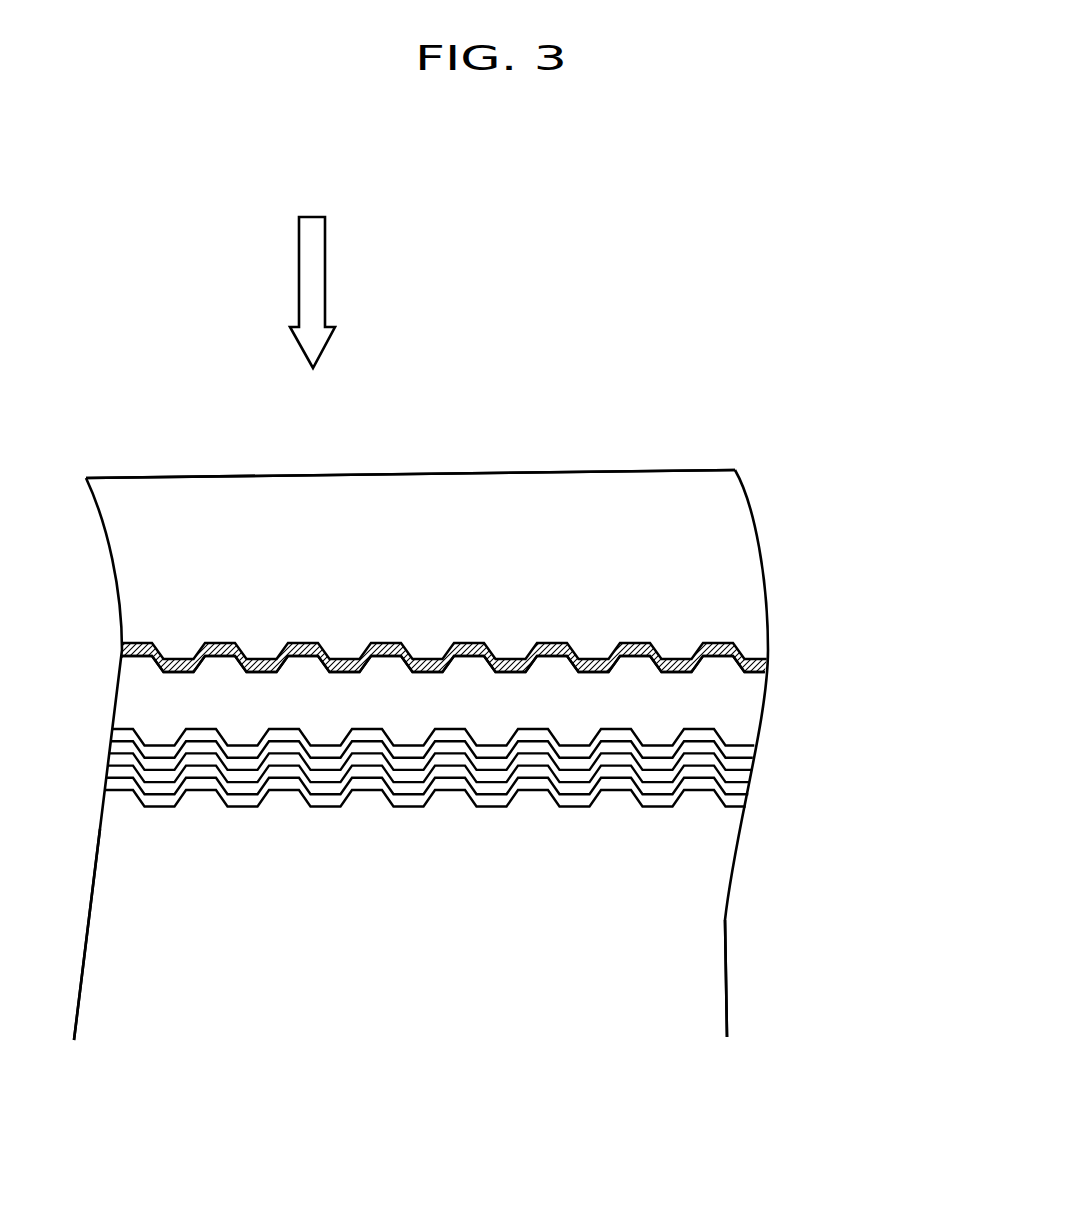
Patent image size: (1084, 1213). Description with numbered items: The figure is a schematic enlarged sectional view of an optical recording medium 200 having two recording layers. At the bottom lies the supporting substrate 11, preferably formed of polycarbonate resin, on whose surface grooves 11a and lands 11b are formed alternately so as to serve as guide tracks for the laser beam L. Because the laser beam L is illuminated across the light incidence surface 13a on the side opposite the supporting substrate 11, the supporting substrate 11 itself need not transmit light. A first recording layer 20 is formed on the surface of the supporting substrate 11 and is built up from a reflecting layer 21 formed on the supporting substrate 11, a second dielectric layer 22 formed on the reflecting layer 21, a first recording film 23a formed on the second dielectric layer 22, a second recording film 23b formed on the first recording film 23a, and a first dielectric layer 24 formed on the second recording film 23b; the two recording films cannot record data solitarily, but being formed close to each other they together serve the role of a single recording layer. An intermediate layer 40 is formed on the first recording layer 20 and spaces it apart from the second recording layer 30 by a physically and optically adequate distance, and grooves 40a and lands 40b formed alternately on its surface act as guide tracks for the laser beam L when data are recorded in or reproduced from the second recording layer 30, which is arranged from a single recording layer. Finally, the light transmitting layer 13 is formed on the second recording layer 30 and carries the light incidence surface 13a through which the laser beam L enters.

The laser beam L is at (325, 270).
The optical recording medium 200 is at (587, 403).
The light incidence surface 13a is at (640, 470).
The light transmitting layer 13 is at (720, 548).
The second recording layer 30 is at (770, 654).
The intermediate layer 40 is at (752, 693).
The grooves 40a is at (218, 658).
The lands 40b is at (428, 672).
The first dielectric layer 24 is at (755, 743).
The second recording film 23b is at (753, 753).
The first recording film 23a is at (752, 770).
The second dielectric layer 22 is at (750, 783).
The reflecting layer 21 is at (480, 832).
The first recording layer 20 is at (528, 789).
The supporting substrate 11 is at (697, 923).
The grooves 11a is at (201, 792).
The lands 11b is at (408, 808).